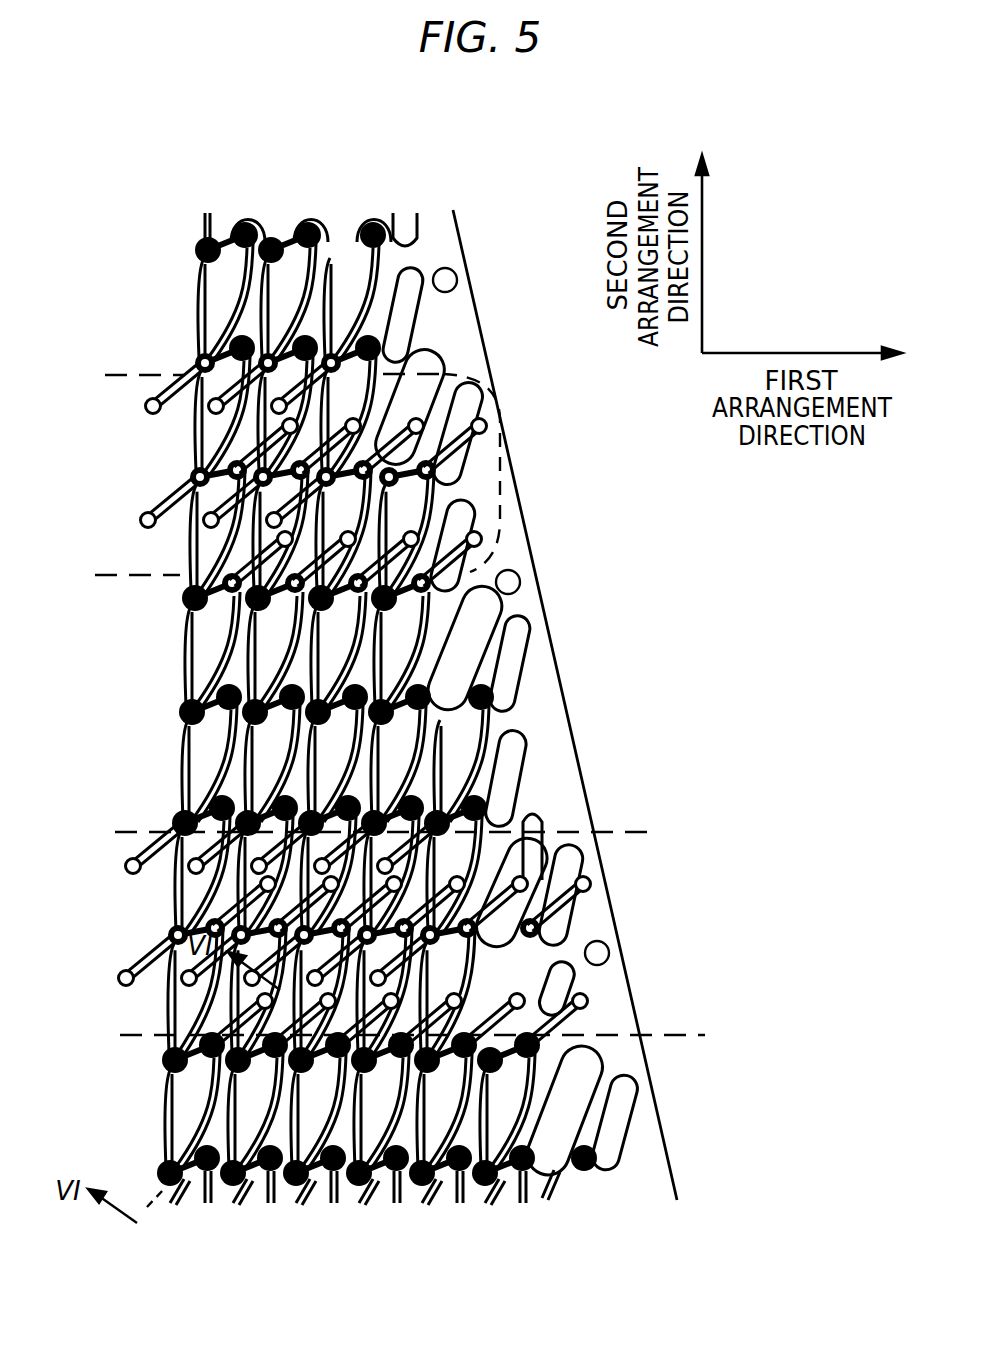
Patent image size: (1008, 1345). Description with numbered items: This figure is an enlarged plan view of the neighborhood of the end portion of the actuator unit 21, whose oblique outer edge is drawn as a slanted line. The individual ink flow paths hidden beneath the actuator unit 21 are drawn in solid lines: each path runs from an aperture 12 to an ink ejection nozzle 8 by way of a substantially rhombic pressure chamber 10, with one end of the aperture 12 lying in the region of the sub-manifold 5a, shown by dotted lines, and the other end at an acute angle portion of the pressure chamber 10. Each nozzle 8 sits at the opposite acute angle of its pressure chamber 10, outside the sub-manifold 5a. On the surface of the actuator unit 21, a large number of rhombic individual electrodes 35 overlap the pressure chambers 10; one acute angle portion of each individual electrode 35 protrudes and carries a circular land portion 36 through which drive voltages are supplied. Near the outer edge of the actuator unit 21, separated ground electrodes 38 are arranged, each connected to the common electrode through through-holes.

The sub-manifold 5a is at (108, 378).
The ink ejection nozzle 8 is at (228, 775).
The pressure chamber 10 is at (200, 297).
The aperture 12 is at (182, 374).
The actuator unit 21 is at (554, 656).
The individual electrode 35 is at (167, 1147).
The land portion 36 is at (380, 208).
The ground electrode 38 is at (458, 281).